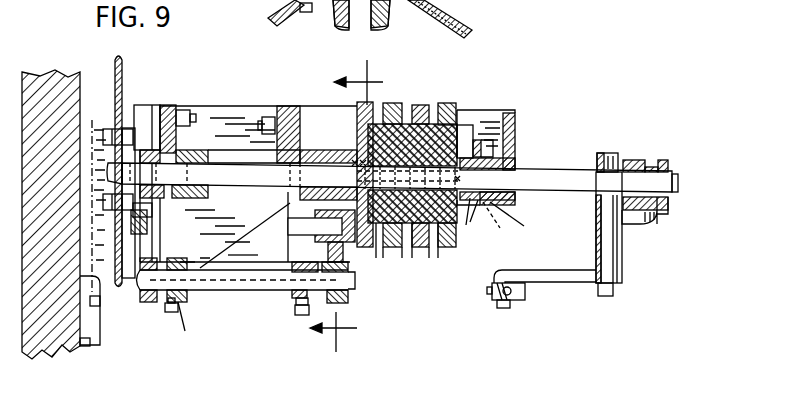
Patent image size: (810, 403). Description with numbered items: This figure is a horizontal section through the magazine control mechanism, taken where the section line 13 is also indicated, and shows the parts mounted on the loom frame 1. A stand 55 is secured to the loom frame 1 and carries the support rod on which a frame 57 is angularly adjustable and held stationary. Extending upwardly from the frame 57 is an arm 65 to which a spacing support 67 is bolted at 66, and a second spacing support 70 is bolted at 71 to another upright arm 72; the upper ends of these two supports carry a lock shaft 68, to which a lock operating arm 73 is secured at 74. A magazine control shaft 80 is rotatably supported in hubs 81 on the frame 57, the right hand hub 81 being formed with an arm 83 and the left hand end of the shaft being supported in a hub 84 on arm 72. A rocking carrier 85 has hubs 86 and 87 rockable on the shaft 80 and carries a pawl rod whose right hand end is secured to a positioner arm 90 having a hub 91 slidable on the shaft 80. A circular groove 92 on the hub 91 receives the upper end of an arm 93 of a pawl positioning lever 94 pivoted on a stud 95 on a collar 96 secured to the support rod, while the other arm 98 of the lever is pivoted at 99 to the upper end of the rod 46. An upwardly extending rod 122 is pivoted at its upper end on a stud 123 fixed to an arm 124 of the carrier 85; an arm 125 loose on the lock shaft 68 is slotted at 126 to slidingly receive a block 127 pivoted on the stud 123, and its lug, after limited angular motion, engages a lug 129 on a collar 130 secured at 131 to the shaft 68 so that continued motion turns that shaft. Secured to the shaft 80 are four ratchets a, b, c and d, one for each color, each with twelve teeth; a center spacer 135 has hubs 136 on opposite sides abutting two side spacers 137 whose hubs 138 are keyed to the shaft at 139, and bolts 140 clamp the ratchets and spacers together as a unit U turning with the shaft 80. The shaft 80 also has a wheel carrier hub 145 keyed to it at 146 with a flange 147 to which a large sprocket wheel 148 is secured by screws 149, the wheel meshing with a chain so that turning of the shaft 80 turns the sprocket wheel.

The loom frame 1 is at (47, 232).
The line 13—13 (section indication) 13 is at (354, 207).
The rod 46 is at (493, 298).
The stand 55 is at (97, 273).
The frame 57 is at (244, 120).
The arm 65 is at (292, 105).
The bolt 66 is at (268, 116).
The spacing support 67 is at (245, 227).
The lock shaft 68 is at (216, 290).
The second spacing support 70 is at (124, 228).
The bolt 71 is at (186, 110).
The upright arm 72 is at (168, 104).
The lock operating arm 73 is at (187, 325).
The securing point 74 is at (168, 312).
The magazine control shaft 80 is at (545, 178).
The hubs 81 is at (534, 203).
The arm 83 is at (516, 138).
The hub 84 is at (180, 152).
The rocking carrier 85 is at (478, 140).
The hub 86 is at (518, 219).
The hub 87 is at (348, 164).
The positioner arm 90 is at (668, 167).
The hub 91 is at (633, 159).
The circular groove 92 is at (655, 160).
The arm 93 is at (637, 222).
The pawl positioning lever 94 is at (608, 214).
The stud 95 is at (614, 290).
The collar 96 is at (598, 160).
The arm 98 is at (558, 276).
The pivot 99 is at (508, 308).
The rod 122 is at (316, 214).
The stud 123 is at (245, 235).
The arm 124 is at (360, 176).
The arm 125 is at (347, 302).
The slot 126 is at (341, 262).
The block 127 is at (328, 233).
The lug 129 is at (292, 298).
The collar 130 is at (300, 306).
The securing point 131 is at (300, 316).
The center spacer 135 is at (395, 248).
The hubs 136 is at (462, 128).
The side spacer 137 is at (432, 258).
The hubs 138 is at (352, 160).
The key 139 is at (458, 170).
The bolts 140 is at (503, 224).
The wheel carrier hub 145 is at (150, 198).
The key 146 is at (145, 147).
The flange 147 is at (113, 128).
The sprocket wheel 148 is at (123, 73).
The screws 149 is at (108, 193).
The ratchet a is at (368, 115).
The ratchet b is at (392, 112).
The ratchet c is at (422, 112).
The ratchet d is at (448, 112).
The unit U is at (457, 246).